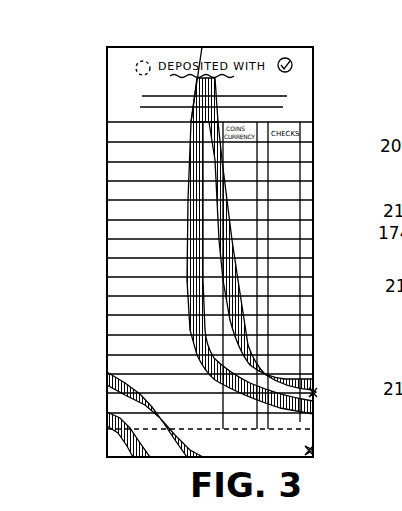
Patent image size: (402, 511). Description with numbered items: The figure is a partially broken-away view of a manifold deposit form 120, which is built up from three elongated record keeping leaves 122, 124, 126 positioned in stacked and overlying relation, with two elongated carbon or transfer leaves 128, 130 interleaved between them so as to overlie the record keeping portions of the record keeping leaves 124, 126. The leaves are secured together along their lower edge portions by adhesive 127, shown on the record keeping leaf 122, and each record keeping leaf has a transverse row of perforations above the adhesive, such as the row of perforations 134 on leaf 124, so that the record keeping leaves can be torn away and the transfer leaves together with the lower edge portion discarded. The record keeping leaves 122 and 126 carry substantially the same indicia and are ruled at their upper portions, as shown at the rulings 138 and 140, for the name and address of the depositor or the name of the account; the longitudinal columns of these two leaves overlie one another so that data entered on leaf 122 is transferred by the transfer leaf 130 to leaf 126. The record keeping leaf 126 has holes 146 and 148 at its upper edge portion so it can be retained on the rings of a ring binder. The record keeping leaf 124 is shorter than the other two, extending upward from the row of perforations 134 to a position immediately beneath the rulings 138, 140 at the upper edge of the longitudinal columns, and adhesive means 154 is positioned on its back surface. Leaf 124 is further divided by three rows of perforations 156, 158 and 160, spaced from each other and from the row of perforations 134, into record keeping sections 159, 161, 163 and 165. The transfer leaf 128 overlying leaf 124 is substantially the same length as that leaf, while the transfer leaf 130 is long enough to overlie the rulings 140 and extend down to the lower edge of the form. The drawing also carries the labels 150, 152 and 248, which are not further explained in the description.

The manifold deposit form 120 is at (107, 73).
The record keeping leaf 122 is at (113, 327).
The record keeping leaf 124 is at (110, 394).
The record keeping leaf 126 is at (108, 427).
The adhesive 127 is at (313, 450).
The transfer leaf 128 is at (186, 384).
The transfer leaf 130 is at (245, 310).
The row of perforations 134 is at (165, 412).
The rulings 138 is at (165, 95).
The rulings 140 is at (278, 96).
The hole 146 is at (283, 58).
The hole 148 is at (172, 40).
The strip portion 150 is at (222, 330).
The strip portion 152 is at (248, 380).
The adhesive means 154 is at (316, 393).
The row of perforations 156 is at (205, 192).
The row of perforations 158 is at (215, 263).
The record keeping section 159 is at (205, 152).
The row of perforations 160 is at (230, 352).
The record keeping section 161 is at (210, 229).
The record keeping section 163 is at (215, 306).
The record keeping section 165 is at (242, 366).
The slip number 248 is at (126, 135).